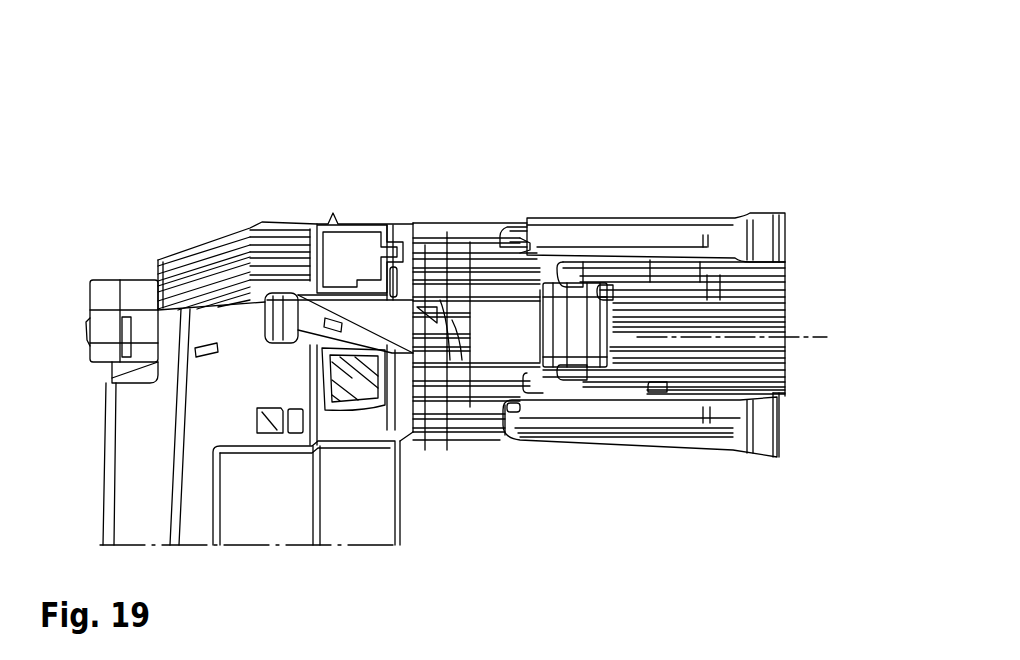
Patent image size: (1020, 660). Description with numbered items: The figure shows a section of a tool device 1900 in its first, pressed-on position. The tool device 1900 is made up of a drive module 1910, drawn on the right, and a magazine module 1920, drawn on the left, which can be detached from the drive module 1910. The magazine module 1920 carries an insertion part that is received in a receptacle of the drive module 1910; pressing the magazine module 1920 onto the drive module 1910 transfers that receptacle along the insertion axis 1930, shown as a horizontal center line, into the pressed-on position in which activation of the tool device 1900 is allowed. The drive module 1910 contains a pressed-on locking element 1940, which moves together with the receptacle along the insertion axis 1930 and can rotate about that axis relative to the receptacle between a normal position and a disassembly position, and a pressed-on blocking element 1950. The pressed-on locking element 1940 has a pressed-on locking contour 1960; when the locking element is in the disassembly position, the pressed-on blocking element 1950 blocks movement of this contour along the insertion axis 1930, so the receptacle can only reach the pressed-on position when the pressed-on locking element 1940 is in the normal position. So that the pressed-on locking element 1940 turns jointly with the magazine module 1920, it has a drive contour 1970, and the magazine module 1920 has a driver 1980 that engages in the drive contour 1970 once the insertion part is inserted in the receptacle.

The tool device 1900 is at (152, 92).
The drive module 1910 is at (778, 158).
The magazine module 1920 is at (435, 159).
The insertion axis 1930 is at (825, 337).
The pressed-on locking element 1940 is at (461, 330).
The pressed-on blocking element 1950 is at (527, 240).
The pressed-on locking contour 1960 is at (443, 370).
The drive contour 1970 is at (446, 300).
The driver 1980 is at (427, 245).